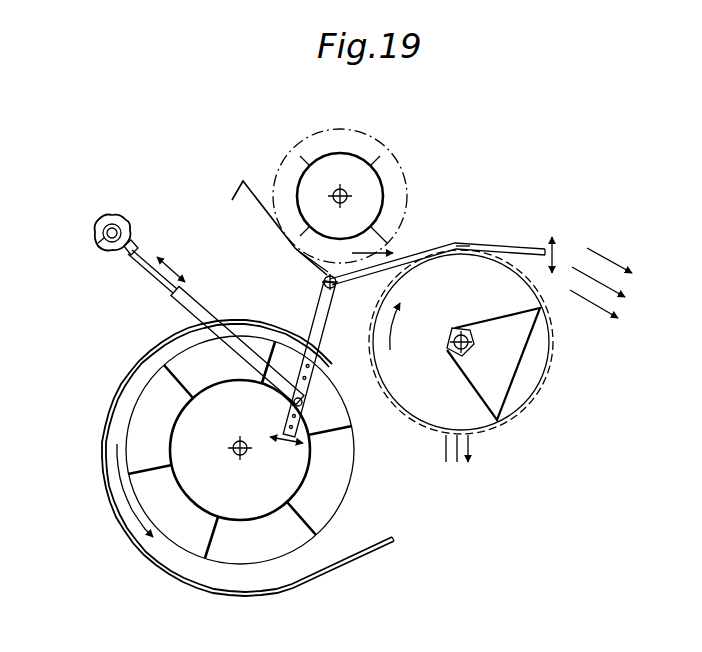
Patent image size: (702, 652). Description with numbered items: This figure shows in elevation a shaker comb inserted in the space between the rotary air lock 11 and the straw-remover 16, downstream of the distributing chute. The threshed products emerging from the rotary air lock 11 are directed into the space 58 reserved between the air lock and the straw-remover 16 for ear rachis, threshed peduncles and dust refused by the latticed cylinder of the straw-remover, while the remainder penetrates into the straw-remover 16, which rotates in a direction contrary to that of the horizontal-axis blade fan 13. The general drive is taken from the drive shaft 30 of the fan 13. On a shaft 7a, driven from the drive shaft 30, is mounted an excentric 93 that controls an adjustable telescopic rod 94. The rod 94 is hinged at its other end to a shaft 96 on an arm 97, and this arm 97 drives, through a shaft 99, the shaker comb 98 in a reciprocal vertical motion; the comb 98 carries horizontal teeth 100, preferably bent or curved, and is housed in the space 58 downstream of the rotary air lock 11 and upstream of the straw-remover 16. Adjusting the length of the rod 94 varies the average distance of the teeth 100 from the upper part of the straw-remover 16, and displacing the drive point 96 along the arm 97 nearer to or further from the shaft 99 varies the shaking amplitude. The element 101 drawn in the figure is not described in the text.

The shaft 7a is at (101, 246).
The rotary air lock 11 is at (367, 183).
The blade fan 13 is at (248, 458).
The straw-remover 16 is at (461, 356).
The drive shaft 30 is at (237, 456).
The space 58 is at (432, 249).
The excentric 93 is at (121, 225).
The adjustable telescopic rod 94 is at (197, 312).
The shaft 96 is at (305, 402).
The arm 97 is at (320, 331).
The shaker comb 98 is at (466, 247).
The shaft 99 is at (334, 288).
The horizontal teeth 100 is at (535, 245).
The deflector 101 is at (247, 204).